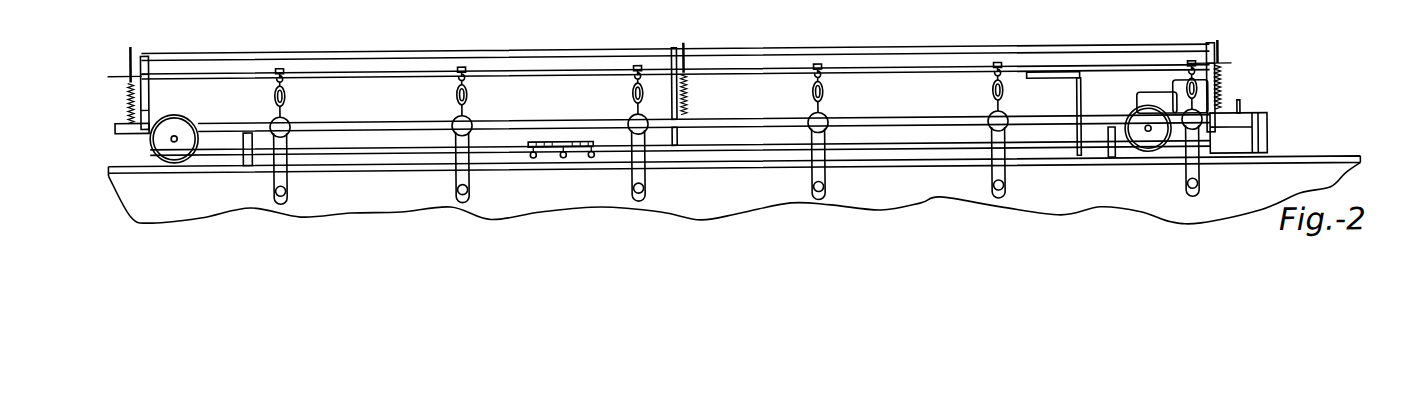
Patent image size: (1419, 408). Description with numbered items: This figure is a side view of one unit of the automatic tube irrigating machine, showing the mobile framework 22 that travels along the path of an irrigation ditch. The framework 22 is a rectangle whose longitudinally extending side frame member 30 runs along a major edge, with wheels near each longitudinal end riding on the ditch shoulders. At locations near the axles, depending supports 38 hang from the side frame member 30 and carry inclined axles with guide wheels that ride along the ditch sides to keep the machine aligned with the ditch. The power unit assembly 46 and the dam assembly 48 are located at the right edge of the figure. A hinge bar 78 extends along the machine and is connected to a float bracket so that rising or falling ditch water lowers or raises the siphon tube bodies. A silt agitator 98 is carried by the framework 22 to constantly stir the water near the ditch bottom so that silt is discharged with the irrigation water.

The mobile framework 22 is at (718, 119).
The side frame member 30 is at (396, 123).
The depending support 38 is at (247, 164).
The power unit assembly 46 is at (1229, 88).
The dam assembly 48 is at (1269, 146).
The hinge bar 78 is at (334, 76).
The silt agitator 98 is at (564, 142).